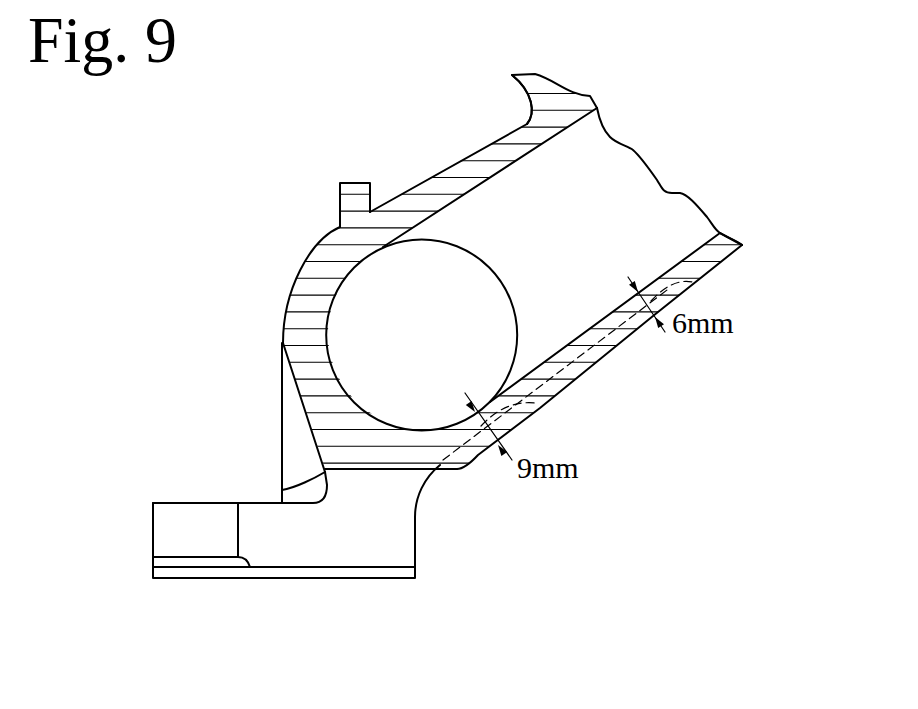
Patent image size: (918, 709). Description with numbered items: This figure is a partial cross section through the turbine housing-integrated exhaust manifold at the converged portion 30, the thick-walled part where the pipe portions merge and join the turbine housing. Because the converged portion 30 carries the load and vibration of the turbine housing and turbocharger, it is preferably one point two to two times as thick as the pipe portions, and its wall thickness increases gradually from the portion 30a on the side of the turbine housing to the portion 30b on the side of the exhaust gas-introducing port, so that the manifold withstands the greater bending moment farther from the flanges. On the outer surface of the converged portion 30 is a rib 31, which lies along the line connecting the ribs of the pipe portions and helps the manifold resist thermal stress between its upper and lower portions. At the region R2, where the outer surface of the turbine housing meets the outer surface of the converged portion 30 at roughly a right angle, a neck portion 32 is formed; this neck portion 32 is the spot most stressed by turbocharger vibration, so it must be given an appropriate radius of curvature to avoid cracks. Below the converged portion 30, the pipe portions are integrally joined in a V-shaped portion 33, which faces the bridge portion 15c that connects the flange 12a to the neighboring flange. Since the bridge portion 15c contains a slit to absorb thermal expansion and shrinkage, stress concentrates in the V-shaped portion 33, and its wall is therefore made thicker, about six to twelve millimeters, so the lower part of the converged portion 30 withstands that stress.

The converged portion 30 is at (397, 206).
The portion on the side of the turbine housing 30a is at (655, 300).
The portion on the side of the exhaust gas-introducing port 30b is at (523, 417).
The rib 31 is at (352, 192).
The neck portion 32 is at (527, 124).
The V-shaped portion 33 is at (297, 453).
The flange 12a is at (336, 533).
The bridge portion 15c is at (203, 530).
The region R2 is at (523, 110).